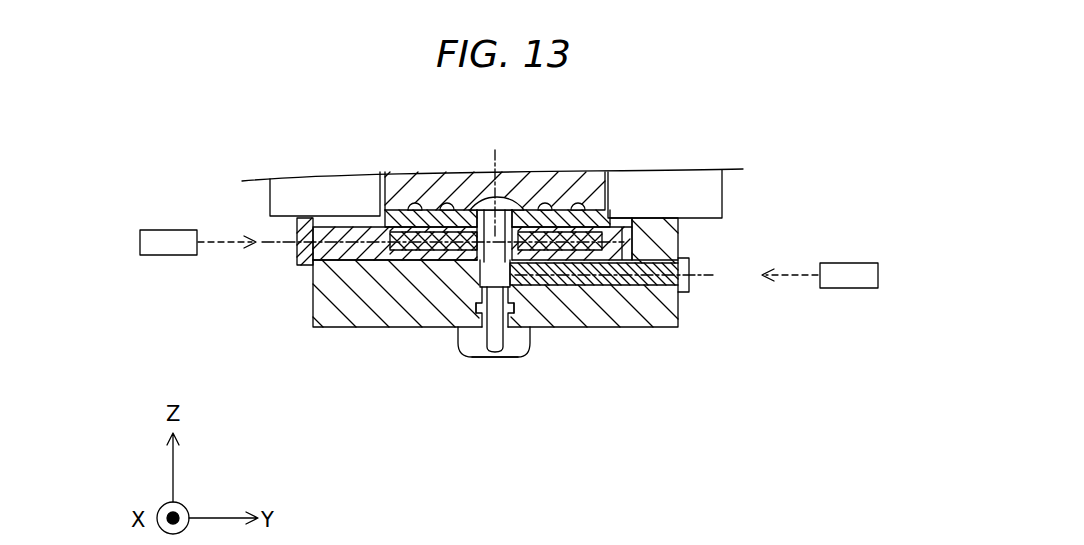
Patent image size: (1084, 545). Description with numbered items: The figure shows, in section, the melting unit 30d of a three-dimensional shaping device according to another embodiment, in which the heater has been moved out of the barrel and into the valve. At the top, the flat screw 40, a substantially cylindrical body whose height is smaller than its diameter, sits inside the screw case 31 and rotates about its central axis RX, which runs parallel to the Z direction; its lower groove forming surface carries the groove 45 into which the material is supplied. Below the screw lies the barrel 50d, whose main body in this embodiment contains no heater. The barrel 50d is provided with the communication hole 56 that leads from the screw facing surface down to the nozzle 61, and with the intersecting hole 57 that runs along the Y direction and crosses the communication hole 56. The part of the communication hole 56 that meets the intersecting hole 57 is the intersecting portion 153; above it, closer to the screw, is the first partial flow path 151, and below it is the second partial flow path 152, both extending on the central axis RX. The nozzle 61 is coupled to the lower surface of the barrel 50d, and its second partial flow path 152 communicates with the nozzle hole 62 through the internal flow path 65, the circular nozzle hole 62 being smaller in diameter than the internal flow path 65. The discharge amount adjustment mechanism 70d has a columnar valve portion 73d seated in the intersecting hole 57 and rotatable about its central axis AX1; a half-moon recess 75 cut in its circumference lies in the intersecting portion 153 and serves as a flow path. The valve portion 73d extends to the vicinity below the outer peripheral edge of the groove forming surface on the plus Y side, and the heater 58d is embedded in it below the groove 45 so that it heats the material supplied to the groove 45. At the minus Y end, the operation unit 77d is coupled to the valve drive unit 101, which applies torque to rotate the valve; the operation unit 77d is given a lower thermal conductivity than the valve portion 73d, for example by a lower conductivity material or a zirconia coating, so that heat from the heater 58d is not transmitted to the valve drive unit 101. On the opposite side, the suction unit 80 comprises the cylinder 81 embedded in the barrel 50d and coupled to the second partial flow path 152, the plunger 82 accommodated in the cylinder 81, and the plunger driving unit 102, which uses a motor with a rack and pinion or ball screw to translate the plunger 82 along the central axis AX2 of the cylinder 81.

The melting unit 30d is at (815, 143).
The screw case 31 is at (723, 192).
The flat screw 40 is at (445, 192).
The groove 45 is at (420, 203).
The barrel 50d is at (356, 316).
The communication hole 56 is at (525, 250).
The first partial flow path 151 is at (542, 234).
The second partial flow path 152 is at (477, 263).
The intersecting portion 153 is at (480, 205).
The intersecting hole 57 is at (413, 262).
The heater 58d is at (580, 212).
The nozzle 61 is at (505, 348).
The nozzle hole 62 is at (494, 353).
The internal flow path 65 is at (513, 313).
The discharge amount adjustment mechanism 70d is at (164, 139).
The valve portion 73d is at (363, 237).
The recess 75 is at (500, 200).
The operation unit 77d is at (293, 233).
The suction unit 80 is at (824, 230).
The cylinder 81 is at (655, 262).
The plunger 82 is at (603, 283).
The valve drive unit 101 is at (168, 229).
The plunger driving unit 102 is at (838, 263).
The central axis RX is at (500, 150).
The central axis AX1 is at (283, 247).
The central axis AX2 is at (698, 278).